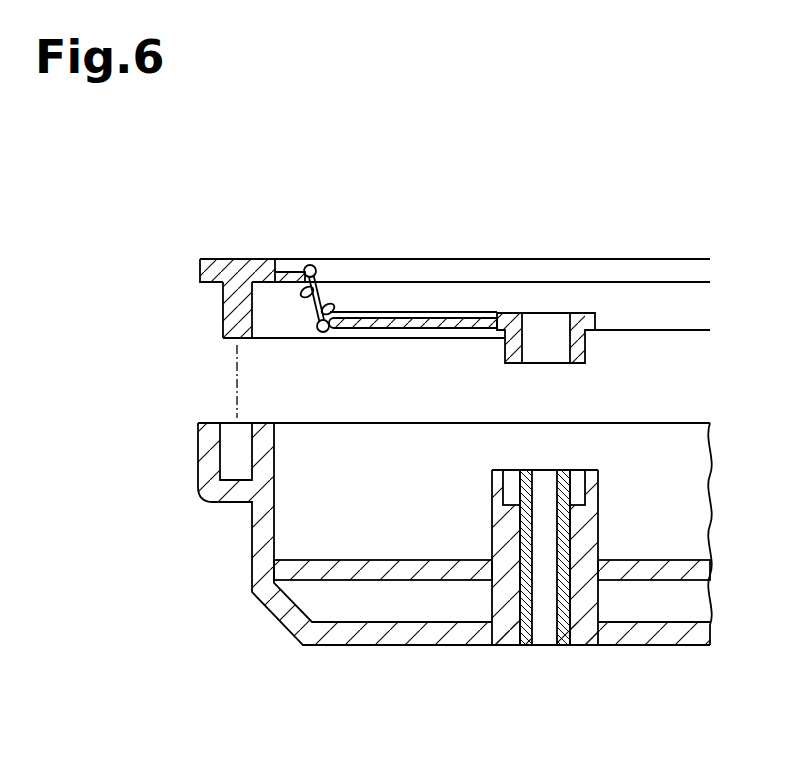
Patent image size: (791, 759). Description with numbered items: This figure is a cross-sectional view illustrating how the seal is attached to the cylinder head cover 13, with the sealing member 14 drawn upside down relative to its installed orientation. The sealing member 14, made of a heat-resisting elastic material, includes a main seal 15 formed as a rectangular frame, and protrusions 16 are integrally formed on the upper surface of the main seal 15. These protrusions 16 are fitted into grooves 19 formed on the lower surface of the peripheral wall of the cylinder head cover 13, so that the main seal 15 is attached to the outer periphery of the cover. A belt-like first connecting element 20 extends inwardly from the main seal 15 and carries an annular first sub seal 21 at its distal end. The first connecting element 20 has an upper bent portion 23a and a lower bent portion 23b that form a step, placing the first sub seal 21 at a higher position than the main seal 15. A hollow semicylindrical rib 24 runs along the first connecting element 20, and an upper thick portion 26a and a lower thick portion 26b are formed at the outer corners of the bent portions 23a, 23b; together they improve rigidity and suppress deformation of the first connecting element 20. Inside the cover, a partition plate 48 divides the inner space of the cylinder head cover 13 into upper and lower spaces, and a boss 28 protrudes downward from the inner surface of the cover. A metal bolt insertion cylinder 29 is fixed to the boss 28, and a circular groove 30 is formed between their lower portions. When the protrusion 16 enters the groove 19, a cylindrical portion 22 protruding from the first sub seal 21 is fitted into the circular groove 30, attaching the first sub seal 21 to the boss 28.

The cylinder head cover 13 is at (337, 646).
The sealing member 14 is at (208, 259).
The main seal 15 is at (203, 272).
The protrusion 16 is at (224, 315).
The groove 19 is at (218, 462).
The first connecting element 20 is at (397, 318).
The first sub seal 21 is at (508, 310).
The cylindrical portion 22 is at (505, 346).
The upper bent portion 23a is at (323, 311).
The lower bent portion 23b is at (304, 289).
The rib 24 is at (359, 329).
The upper thick portion 26a is at (325, 333).
The lower thick portion 26b is at (310, 265).
The boss 28 is at (502, 518).
The bolt insertion cylinder 29 is at (575, 520).
The circular groove 30 is at (512, 478).
The partition plate 48 is at (677, 560).